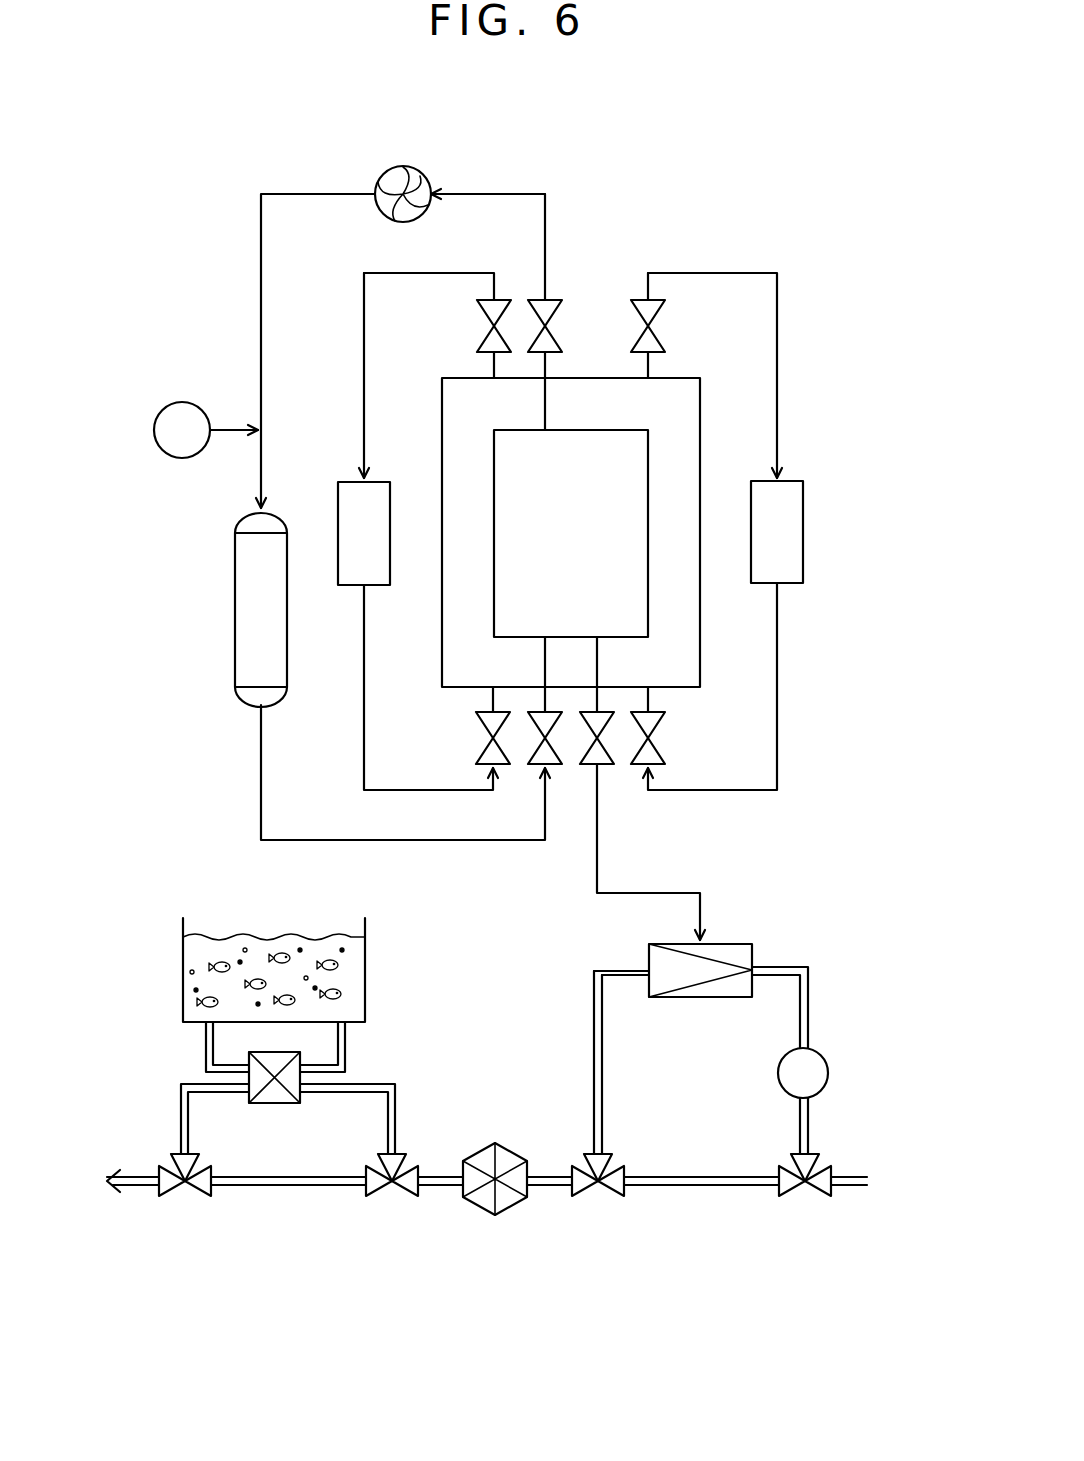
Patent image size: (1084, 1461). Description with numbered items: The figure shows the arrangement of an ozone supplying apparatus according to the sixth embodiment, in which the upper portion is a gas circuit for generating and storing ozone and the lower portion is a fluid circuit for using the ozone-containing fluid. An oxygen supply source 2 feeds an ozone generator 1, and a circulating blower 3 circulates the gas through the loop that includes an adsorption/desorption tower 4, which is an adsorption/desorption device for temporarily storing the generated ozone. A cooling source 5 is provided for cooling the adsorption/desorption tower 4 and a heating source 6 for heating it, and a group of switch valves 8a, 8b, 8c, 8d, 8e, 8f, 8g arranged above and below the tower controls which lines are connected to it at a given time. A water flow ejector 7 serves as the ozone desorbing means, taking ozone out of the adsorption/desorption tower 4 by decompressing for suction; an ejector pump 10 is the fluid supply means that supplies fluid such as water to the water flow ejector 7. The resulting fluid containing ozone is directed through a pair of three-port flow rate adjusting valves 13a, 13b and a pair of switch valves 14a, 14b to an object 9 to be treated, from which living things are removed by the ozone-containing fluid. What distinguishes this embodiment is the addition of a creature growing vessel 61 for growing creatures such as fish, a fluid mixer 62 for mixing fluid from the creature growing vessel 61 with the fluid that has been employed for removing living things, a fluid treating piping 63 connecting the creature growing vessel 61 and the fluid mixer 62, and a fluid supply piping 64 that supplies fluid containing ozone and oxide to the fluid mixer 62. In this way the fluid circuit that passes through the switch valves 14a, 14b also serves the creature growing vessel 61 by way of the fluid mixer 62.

The ozone generator 1 is at (250, 628).
The oxygen supply source 2 is at (176, 413).
The circulating blower 3 is at (392, 170).
The adsorption/desorption tower 4 is at (705, 428).
The cooling source 5 is at (352, 507).
The heating source 6 is at (795, 543).
The water flow ejector 7 is at (735, 955).
The switch valve 8a is at (495, 308).
The switch valve 8b is at (490, 757).
The switch valve 8c is at (547, 308).
The switch valve 8d is at (542, 757).
The switch valve 8e is at (650, 308).
The switch valve 8f is at (600, 757).
The switch valve 8g is at (652, 757).
The object to be treated 9 is at (500, 1160).
The ejector pump 10 is at (830, 1072).
The three-port flow rate adjusting valve 13a is at (818, 1190).
The three-port flow rate adjusting valve 13b is at (612, 1190).
The switch valve 14a is at (403, 1190).
The switch valve 14b is at (200, 1190).
The creature growing vessel 61 is at (368, 975).
The fluid mixer 62 is at (283, 1095).
The fluid treating piping 63 is at (346, 1043).
The fluid supply piping 64 is at (342, 1088).